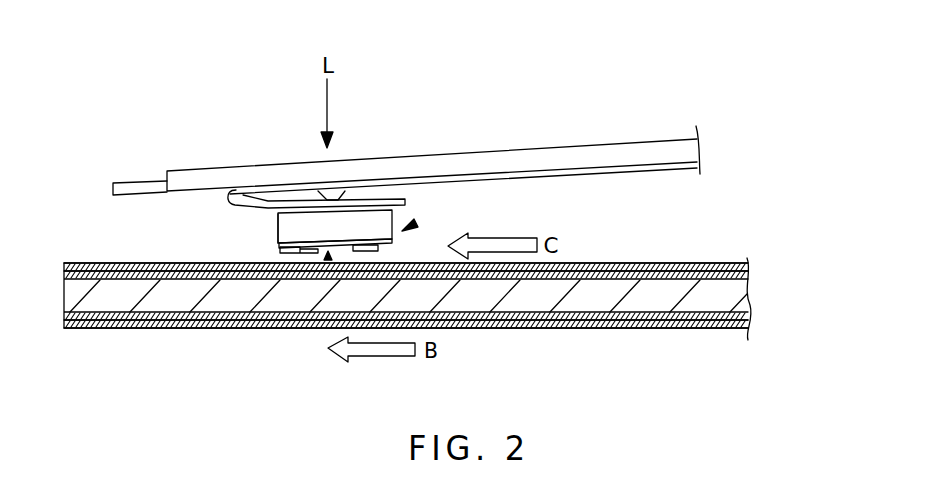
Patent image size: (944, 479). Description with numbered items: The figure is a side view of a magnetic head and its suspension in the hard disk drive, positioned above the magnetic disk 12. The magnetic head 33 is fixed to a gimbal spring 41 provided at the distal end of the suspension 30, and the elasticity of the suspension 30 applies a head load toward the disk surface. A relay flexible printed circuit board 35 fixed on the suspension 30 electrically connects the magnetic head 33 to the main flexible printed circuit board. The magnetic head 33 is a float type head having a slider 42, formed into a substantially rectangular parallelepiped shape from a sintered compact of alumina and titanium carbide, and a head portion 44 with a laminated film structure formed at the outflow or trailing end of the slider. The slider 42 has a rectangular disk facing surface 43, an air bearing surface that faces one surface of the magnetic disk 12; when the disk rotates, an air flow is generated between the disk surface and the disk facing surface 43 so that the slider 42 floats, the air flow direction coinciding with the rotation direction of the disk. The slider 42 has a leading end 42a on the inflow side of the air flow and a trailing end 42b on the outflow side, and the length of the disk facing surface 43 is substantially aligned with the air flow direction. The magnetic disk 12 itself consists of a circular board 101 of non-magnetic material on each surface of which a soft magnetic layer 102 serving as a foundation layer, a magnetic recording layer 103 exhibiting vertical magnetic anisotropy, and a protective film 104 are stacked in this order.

The magnetic disk 12 is at (446, 285).
The suspension 30 is at (577, 155).
The magnetic head 33 is at (412, 226).
The relay flexible printed circuit board 35 is at (644, 171).
The gimbal spring 41 is at (393, 198).
The slider 42 is at (308, 215).
The leading end 42a is at (392, 220).
The trailing end 42b is at (278, 246).
The disk facing surface 43 is at (328, 259).
The head portion 44 is at (279, 231).
The board 101 is at (668, 303).
The soft magnetic layer 102 is at (749, 275).
The magnetic recording layer 103 is at (677, 266).
The protective film 104 is at (714, 248).